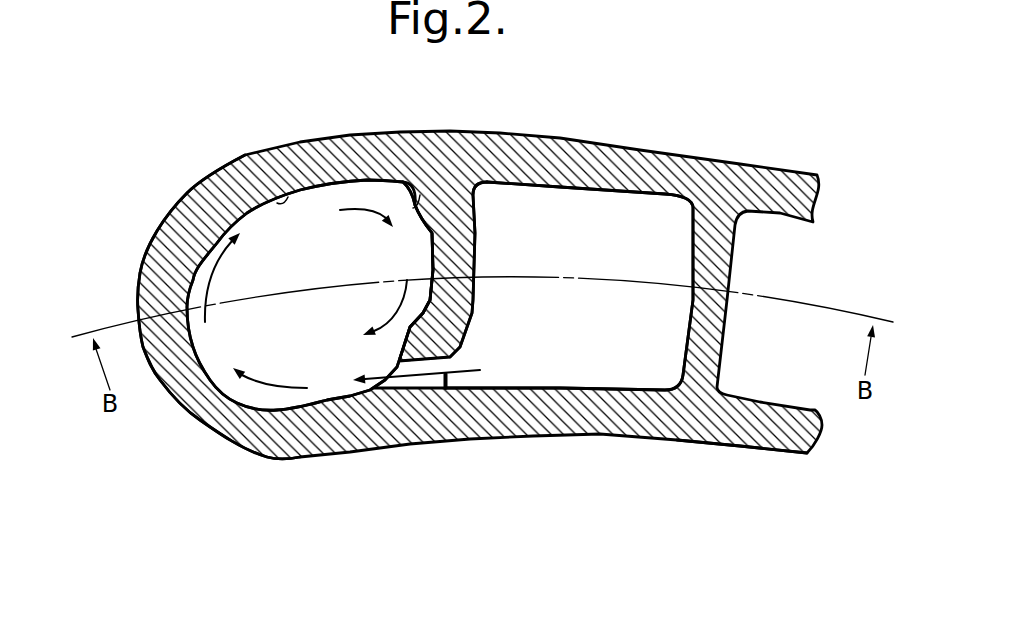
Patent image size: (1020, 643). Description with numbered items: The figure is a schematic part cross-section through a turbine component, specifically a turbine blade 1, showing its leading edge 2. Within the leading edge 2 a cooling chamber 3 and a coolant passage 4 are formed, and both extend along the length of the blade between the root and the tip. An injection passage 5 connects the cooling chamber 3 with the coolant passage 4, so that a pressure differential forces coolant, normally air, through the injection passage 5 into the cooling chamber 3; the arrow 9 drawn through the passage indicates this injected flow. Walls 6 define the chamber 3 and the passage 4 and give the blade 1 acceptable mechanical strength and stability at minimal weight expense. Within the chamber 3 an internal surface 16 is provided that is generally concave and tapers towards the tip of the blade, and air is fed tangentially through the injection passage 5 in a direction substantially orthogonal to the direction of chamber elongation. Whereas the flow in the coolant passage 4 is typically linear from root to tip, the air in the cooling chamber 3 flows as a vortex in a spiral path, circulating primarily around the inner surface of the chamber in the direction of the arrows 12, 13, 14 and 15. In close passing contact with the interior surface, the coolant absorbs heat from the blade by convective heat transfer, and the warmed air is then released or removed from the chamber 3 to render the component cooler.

The turbine blade 1 is at (240, 153).
The leading edge 2 is at (188, 192).
The cooling chamber 3 is at (322, 205).
The coolant passage 4 is at (560, 197).
The injection passage 5 is at (420, 388).
The walls 6 is at (467, 260).
The flow through slot 9 is at (397, 380).
The arrow 12 is at (273, 392).
The arrow 13 is at (207, 270).
The arrow 14 is at (367, 205).
The arrow 15 is at (410, 318).
The internal surface 16 is at (288, 197).